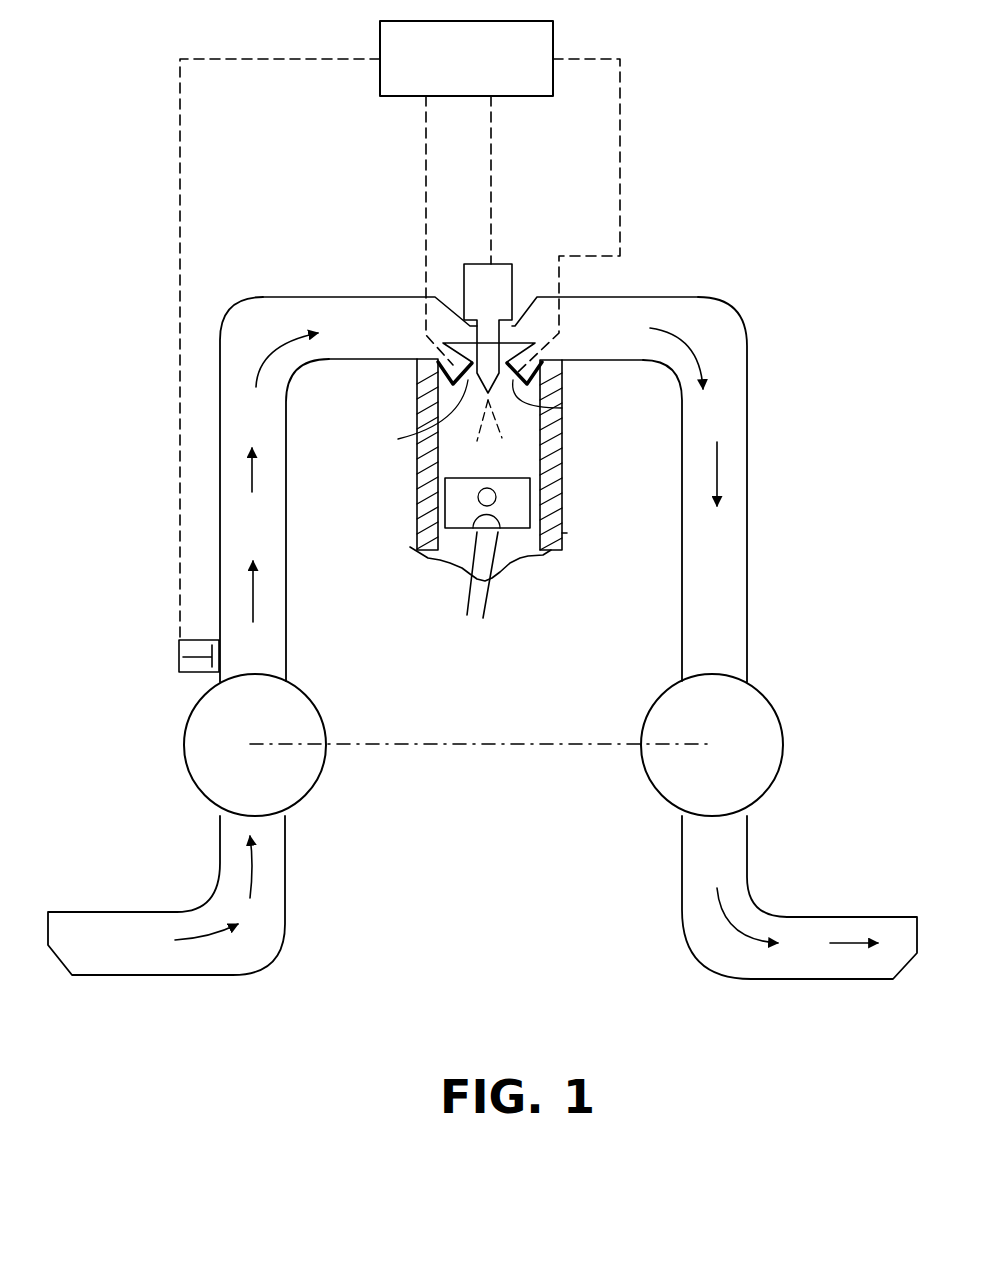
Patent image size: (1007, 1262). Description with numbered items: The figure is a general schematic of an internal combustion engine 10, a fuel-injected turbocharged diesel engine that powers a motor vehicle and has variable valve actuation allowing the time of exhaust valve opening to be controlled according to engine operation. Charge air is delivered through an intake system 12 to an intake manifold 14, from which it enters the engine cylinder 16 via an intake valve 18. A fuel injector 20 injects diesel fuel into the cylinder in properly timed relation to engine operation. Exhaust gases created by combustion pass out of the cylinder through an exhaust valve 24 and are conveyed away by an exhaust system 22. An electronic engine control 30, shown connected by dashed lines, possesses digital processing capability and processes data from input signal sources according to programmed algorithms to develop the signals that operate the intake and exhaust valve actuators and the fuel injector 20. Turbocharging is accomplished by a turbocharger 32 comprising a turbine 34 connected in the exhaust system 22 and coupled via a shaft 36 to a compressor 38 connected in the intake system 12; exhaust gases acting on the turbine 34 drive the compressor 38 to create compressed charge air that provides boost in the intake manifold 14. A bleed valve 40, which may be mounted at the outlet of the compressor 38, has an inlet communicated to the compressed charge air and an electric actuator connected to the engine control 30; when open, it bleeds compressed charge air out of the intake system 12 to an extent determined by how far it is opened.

The internal combustion engine 10 is at (453, 916).
The intake system 12 is at (285, 863).
The intake manifold 14 is at (415, 297).
The engine cylinder 16 is at (502, 453).
The intake valve 18 is at (430, 423).
The fuel injector 20 is at (512, 266).
The exhaust system 22 is at (680, 895).
The exhaust valve 24 is at (562, 408).
The electronic engine control 30 is at (530, 96).
The turbocharger 32 is at (490, 734).
The turbine 34 is at (778, 780).
The shaft 36 is at (472, 746).
The compressor 38 is at (195, 787).
The bleed valve 40 is at (195, 640).